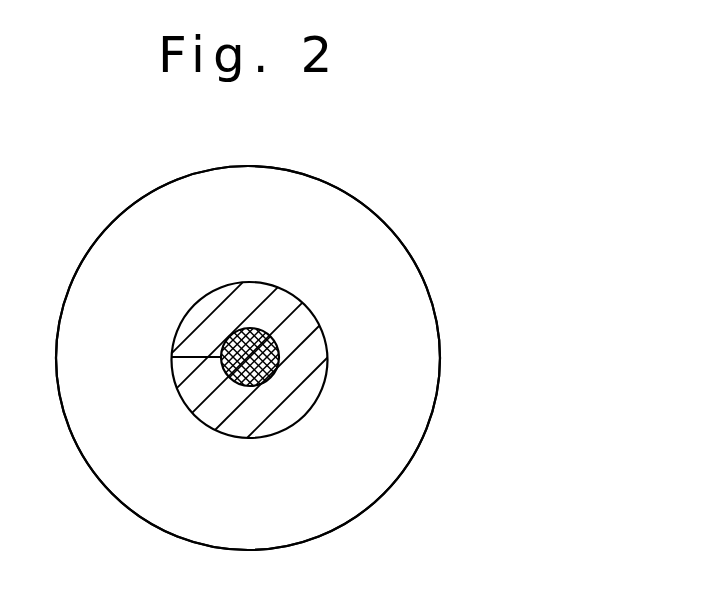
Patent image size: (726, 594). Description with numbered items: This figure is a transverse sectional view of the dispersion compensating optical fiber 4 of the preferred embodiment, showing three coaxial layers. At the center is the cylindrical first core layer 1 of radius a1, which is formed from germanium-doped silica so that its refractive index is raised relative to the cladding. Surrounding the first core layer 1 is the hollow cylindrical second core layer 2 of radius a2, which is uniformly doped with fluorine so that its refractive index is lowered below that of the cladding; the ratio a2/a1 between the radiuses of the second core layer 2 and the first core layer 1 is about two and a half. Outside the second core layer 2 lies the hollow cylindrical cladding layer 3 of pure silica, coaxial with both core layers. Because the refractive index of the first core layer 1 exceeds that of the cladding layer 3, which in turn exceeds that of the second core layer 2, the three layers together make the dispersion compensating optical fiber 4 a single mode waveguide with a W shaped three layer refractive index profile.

The first core layer 1 is at (258, 383).
The second core layer 2 is at (303, 322).
The cladding layer 3 is at (428, 358).
The dispersion compensating optical fiber 4 is at (397, 216).
The radius of the first core layer a1 is at (241, 335).
The radius of the second core layer a2 is at (176, 361).